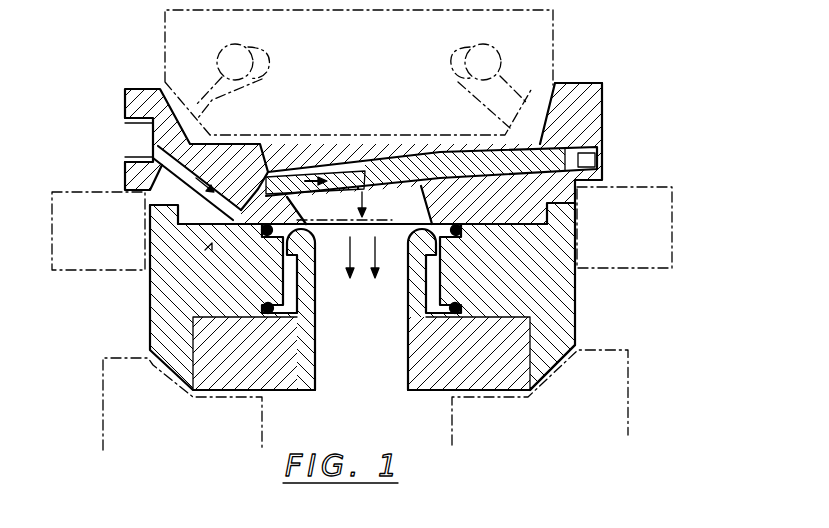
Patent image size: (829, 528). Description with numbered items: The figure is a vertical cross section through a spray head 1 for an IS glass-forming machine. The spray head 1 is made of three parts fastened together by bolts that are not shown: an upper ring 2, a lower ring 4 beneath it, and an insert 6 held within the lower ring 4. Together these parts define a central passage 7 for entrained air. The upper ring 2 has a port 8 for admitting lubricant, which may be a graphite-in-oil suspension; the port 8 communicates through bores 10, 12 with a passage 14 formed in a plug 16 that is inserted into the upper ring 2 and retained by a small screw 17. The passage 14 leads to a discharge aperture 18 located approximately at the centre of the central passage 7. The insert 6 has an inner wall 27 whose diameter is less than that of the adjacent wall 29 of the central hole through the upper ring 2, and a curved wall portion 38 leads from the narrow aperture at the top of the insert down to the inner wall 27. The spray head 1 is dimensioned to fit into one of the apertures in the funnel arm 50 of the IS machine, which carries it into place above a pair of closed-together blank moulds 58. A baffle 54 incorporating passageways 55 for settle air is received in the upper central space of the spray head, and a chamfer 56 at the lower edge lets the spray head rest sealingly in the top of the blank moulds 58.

The spray head 1 is at (619, 62).
The upper ring 2 is at (592, 122).
The lower ring 4 is at (565, 313).
The insert 6 is at (427, 390).
The central passage 7 is at (367, 360).
The port 8 is at (125, 134).
The bore 10 is at (125, 190).
The bore 12 is at (247, 242).
The passage 14 is at (338, 176).
The plug 16 is at (587, 84).
The small screw 17 is at (603, 160).
The discharge aperture 18 is at (384, 173).
The inner wall 27 is at (315, 306).
The wall 29 is at (322, 214).
The curved wall portion 38 is at (410, 238).
The funnel arm 50 is at (93, 258).
The baffle 54 is at (550, 49).
The passageways 55 is at (264, 63).
The chamfer 56 is at (560, 344).
The blank moulds 58 is at (114, 392).